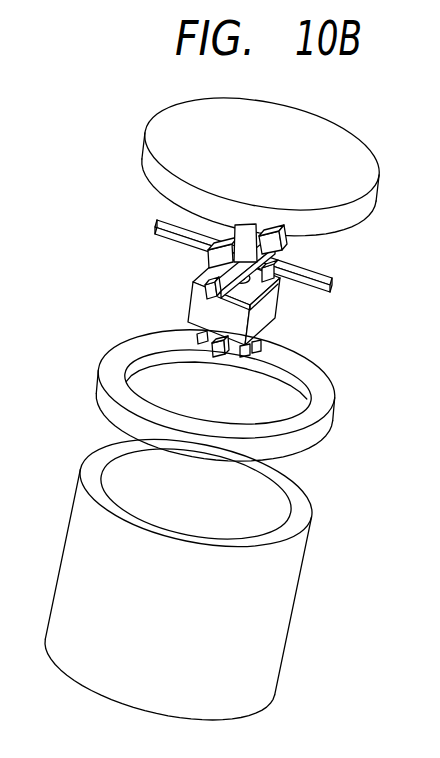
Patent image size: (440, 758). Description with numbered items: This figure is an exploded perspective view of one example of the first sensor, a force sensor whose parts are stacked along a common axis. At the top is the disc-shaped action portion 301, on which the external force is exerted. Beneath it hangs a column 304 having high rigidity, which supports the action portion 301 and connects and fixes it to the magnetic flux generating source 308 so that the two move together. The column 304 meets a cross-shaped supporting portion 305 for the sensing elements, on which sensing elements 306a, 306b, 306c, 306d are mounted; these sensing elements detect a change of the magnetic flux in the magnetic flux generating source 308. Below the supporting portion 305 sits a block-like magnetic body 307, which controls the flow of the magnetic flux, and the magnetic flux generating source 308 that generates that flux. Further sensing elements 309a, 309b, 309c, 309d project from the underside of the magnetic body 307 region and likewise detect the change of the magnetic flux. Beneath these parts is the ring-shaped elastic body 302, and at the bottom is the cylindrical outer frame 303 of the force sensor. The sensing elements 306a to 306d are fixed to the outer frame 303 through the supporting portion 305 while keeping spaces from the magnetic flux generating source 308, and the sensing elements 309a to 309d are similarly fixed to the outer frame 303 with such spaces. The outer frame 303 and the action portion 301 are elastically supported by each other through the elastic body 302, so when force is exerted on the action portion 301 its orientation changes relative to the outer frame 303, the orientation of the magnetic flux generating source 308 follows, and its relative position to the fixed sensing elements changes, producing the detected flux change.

The action portion 301 is at (318, 128).
The elastic body 302 is at (100, 385).
The outer frame 303 is at (67, 567).
The column 304 is at (222, 236).
The supporting portion for the sensing element 305 is at (331, 287).
The sensing element 306a is at (204, 271).
The sensing element 306b is at (275, 278).
The sensing element 306c is at (286, 240).
The sensing element 306d is at (207, 252).
The magnetic body 307 is at (197, 307).
The magnetic flux generating source 308 is at (276, 286).
The sensing element 309a is at (212, 357).
The sensing element 309b is at (243, 357).
The sensing element 309c is at (262, 345).
The sensing element 309d is at (187, 342).